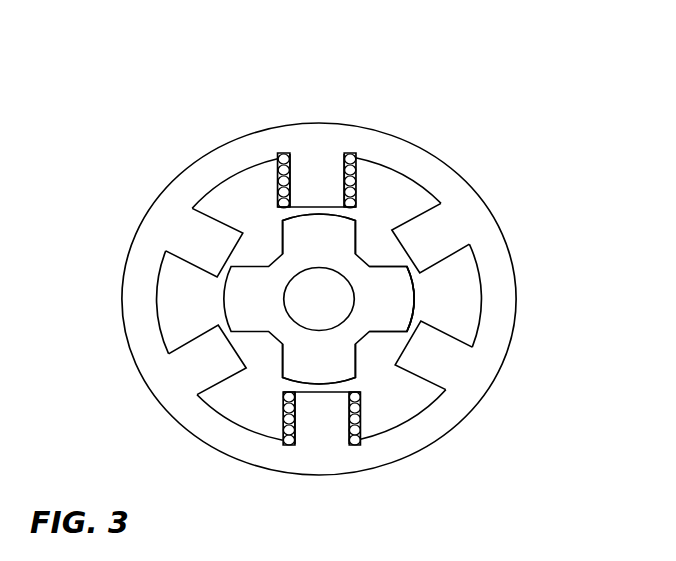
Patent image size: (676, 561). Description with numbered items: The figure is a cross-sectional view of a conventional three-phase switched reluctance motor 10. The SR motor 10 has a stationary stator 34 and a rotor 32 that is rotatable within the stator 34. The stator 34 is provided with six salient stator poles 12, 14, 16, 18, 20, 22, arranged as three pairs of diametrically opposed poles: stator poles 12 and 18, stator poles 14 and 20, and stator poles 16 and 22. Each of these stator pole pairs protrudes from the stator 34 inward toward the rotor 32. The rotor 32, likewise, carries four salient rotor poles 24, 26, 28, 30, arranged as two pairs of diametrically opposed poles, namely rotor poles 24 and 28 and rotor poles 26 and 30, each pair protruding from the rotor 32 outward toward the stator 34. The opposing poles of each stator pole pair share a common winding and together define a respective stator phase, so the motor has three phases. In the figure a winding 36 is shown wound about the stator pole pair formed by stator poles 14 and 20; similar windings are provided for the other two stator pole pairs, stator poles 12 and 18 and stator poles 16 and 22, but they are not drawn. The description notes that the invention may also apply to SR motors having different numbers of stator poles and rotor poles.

The switched reluctance motor 10 is at (189, 116).
The stator pole 12 is at (197, 243).
The stator pole 14 is at (315, 180).
The stator pole 16 is at (438, 235).
The stator pole 18 is at (433, 358).
The stator pole 20 is at (323, 418).
The stator pole 22 is at (202, 362).
The rotor pole 24 is at (243, 296).
The rotor pole 26 is at (313, 238).
The rotor pole 28 is at (393, 298).
The rotor pole 30 is at (323, 357).
The rotor 32 is at (398, 314).
The stator 34 is at (433, 168).
The winding 36 is at (355, 177).